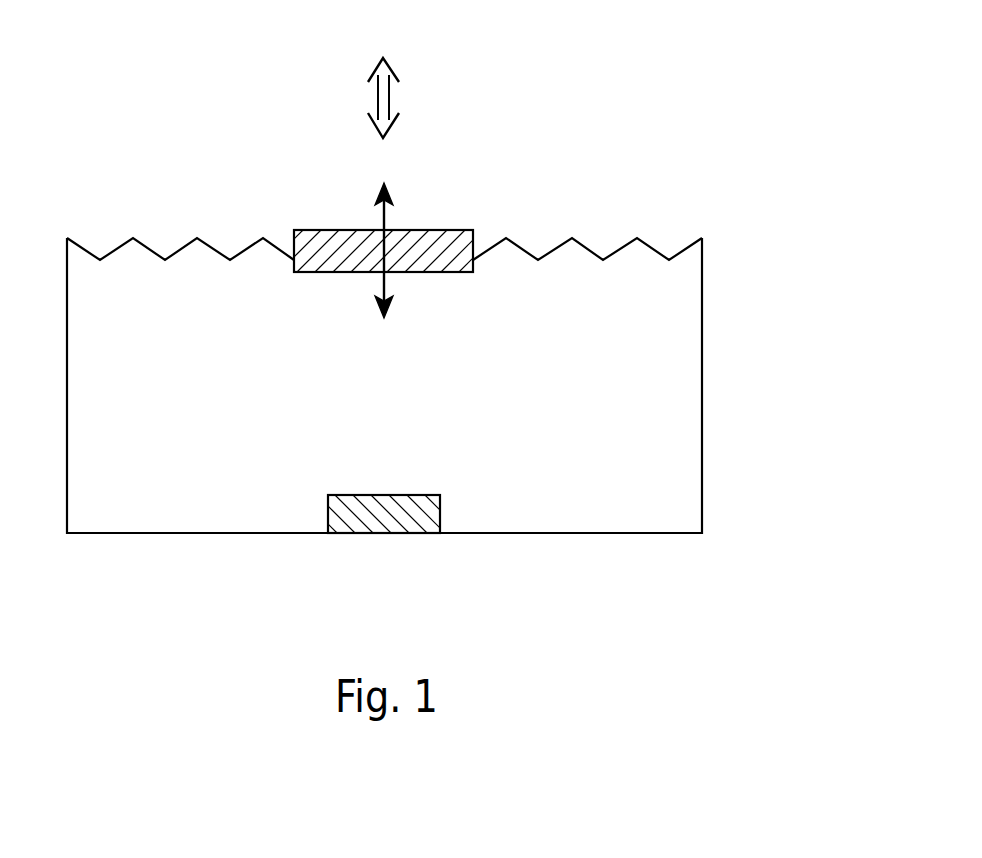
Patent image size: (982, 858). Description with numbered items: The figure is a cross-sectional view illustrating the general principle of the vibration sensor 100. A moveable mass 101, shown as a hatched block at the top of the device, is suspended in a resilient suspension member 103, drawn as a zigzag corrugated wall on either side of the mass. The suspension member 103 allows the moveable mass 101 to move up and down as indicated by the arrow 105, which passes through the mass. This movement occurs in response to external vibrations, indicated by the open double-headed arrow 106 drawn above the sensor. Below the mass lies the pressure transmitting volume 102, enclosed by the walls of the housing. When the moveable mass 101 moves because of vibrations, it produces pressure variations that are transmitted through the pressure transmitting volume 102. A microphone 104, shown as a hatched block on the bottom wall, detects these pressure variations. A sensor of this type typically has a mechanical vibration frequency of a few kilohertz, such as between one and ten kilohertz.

The vibration sensor 100 is at (712, 148).
The moveable mass 101 is at (428, 247).
The pressure transmitting volume 102 is at (660, 413).
The resilient suspension member 103 is at (639, 259).
The microphone 104 is at (393, 527).
The arrow indicating movement of the moveable mass 105 is at (387, 290).
The arrow indicating vibrations 106 is at (393, 88).